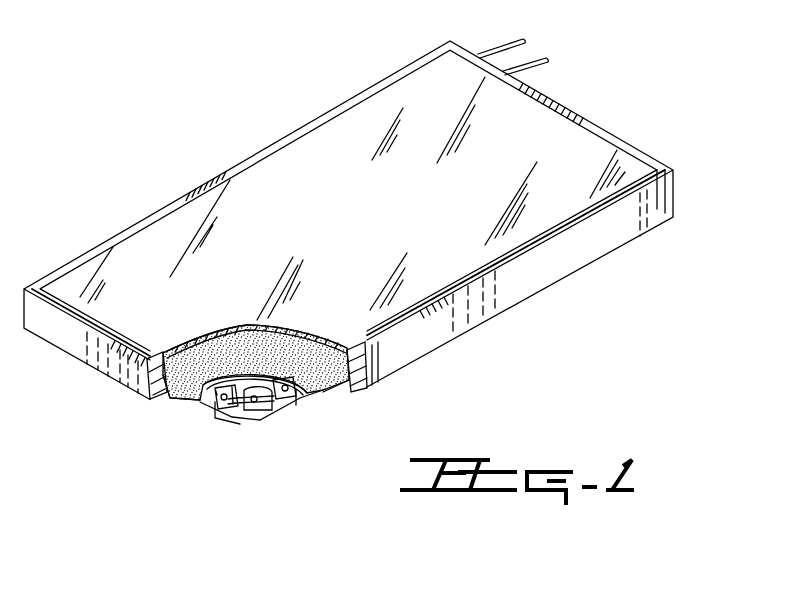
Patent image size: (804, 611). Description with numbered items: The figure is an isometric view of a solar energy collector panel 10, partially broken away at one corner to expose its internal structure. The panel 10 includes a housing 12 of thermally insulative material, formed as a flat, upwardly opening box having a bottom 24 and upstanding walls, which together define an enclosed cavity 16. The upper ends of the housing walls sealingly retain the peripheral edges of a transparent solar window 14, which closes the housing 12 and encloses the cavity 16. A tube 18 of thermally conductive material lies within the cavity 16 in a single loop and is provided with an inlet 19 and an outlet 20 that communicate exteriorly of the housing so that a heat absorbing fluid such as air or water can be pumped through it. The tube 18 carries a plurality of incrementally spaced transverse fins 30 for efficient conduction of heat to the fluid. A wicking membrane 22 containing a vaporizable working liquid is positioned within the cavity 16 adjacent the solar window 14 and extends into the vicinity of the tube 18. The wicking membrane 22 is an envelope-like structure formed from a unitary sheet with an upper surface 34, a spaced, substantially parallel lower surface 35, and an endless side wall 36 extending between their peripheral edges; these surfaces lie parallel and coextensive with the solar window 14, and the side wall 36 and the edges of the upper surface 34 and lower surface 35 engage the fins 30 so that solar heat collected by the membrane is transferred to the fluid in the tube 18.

The solar energy collector panel 10 is at (648, 148).
The housing 12 is at (641, 220).
The solar window 14 is at (578, 133).
The cavity 16 is at (165, 376).
The tube 18 is at (252, 408).
The inlet 19 is at (502, 44).
The outlet 20 is at (540, 64).
The wicking membrane 22 is at (323, 392).
The bottom 24 is at (165, 398).
The transverse fins 30 is at (222, 405).
The upper surface 34 is at (297, 333).
The lower surface 35 is at (303, 388).
The endless side wall 36 is at (185, 394).